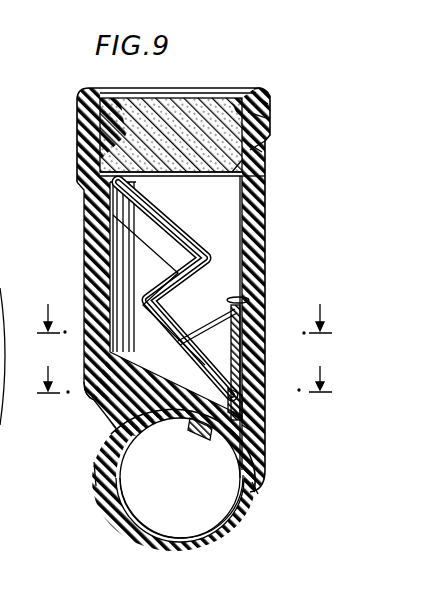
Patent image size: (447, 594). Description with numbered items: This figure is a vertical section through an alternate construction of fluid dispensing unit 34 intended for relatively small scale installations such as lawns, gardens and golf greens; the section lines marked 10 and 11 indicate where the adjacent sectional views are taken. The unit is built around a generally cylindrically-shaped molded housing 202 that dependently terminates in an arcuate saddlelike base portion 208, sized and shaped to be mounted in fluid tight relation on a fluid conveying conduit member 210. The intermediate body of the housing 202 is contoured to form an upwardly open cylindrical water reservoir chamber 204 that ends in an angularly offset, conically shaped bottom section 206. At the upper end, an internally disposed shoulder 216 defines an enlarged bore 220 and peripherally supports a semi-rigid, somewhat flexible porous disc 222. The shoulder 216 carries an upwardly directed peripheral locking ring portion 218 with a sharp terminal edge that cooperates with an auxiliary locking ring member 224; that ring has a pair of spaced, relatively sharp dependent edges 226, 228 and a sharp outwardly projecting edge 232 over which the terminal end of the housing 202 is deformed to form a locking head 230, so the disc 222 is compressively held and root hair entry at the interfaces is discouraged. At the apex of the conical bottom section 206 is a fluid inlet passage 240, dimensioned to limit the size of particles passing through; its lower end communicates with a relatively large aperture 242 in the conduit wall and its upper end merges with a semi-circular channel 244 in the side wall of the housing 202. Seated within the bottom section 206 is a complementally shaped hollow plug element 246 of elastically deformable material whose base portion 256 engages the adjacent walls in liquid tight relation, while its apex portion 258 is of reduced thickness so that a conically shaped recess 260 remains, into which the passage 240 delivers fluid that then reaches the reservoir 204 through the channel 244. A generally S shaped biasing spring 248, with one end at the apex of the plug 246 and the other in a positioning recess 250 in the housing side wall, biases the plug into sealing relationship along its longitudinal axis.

The fluid dispensing unit 34 is at (214, 78).
The housing 202 is at (258, 278).
The water reservoir chamber 204 is at (215, 228).
The bottom section 206 is at (107, 380).
The base portion 208 is at (93, 472).
The conduit member 210 is at (127, 520).
The shoulder 216 is at (265, 210).
The locking ring portion 218 is at (240, 162).
The enlarged bore 220 is at (266, 174).
The porous disc 222 is at (130, 130).
The auxiliary locking ring member 224 is at (270, 119).
The dependent edge 226 is at (270, 131).
The dependent edge 228 is at (264, 148).
The locking head 230 is at (265, 93).
The outwardly projecting edge 232 is at (272, 100).
The fluid inlet passage 240 is at (262, 462).
The aperture 242 is at (232, 468).
The channel 244 is at (249, 300).
The plug element 246 is at (236, 357).
The biasing spring 248 is at (207, 260).
The positioning recess 250 is at (96, 200).
The base portion 256 is at (232, 309).
The apex portion 258 is at (243, 410).
The recess 260 is at (257, 433).
The section line 10 is at (184, 327).
The section line 11 is at (184, 387).